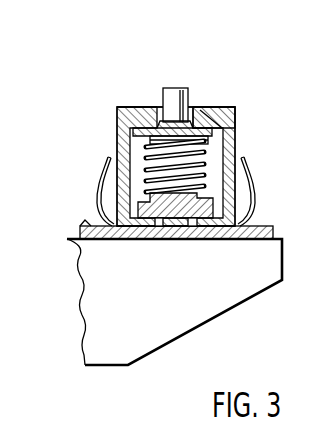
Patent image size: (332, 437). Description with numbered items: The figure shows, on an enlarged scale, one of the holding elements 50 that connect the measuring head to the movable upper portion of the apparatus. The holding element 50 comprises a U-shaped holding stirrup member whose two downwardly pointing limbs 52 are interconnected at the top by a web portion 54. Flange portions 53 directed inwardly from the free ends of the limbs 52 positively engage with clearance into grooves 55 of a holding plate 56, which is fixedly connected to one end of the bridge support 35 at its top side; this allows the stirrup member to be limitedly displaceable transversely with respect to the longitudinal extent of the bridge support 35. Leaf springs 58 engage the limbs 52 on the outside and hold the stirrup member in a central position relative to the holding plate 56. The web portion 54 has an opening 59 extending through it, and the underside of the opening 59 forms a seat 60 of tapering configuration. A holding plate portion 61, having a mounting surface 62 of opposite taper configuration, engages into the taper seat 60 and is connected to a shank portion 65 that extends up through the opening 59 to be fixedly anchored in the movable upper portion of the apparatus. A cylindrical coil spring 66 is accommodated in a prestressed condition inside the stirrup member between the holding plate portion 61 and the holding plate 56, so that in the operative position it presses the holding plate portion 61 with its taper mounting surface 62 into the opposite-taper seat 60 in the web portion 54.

The bridge support 35 is at (222, 318).
The holding element 50 is at (134, 58).
The limbs 52 is at (120, 143).
The flange portions 53 is at (215, 228).
The web portion 54 is at (213, 102).
The grooves 55 is at (158, 228).
The holding plate 56 is at (79, 225).
The leaf springs 58 is at (100, 203).
The opening 59 is at (116, 108).
The seat 60 is at (212, 116).
The holding plate portion 61 is at (243, 161).
The mounting surface 62 is at (217, 148).
The shank portion 65 is at (170, 100).
The cylindrical coil spring 66 is at (140, 175).